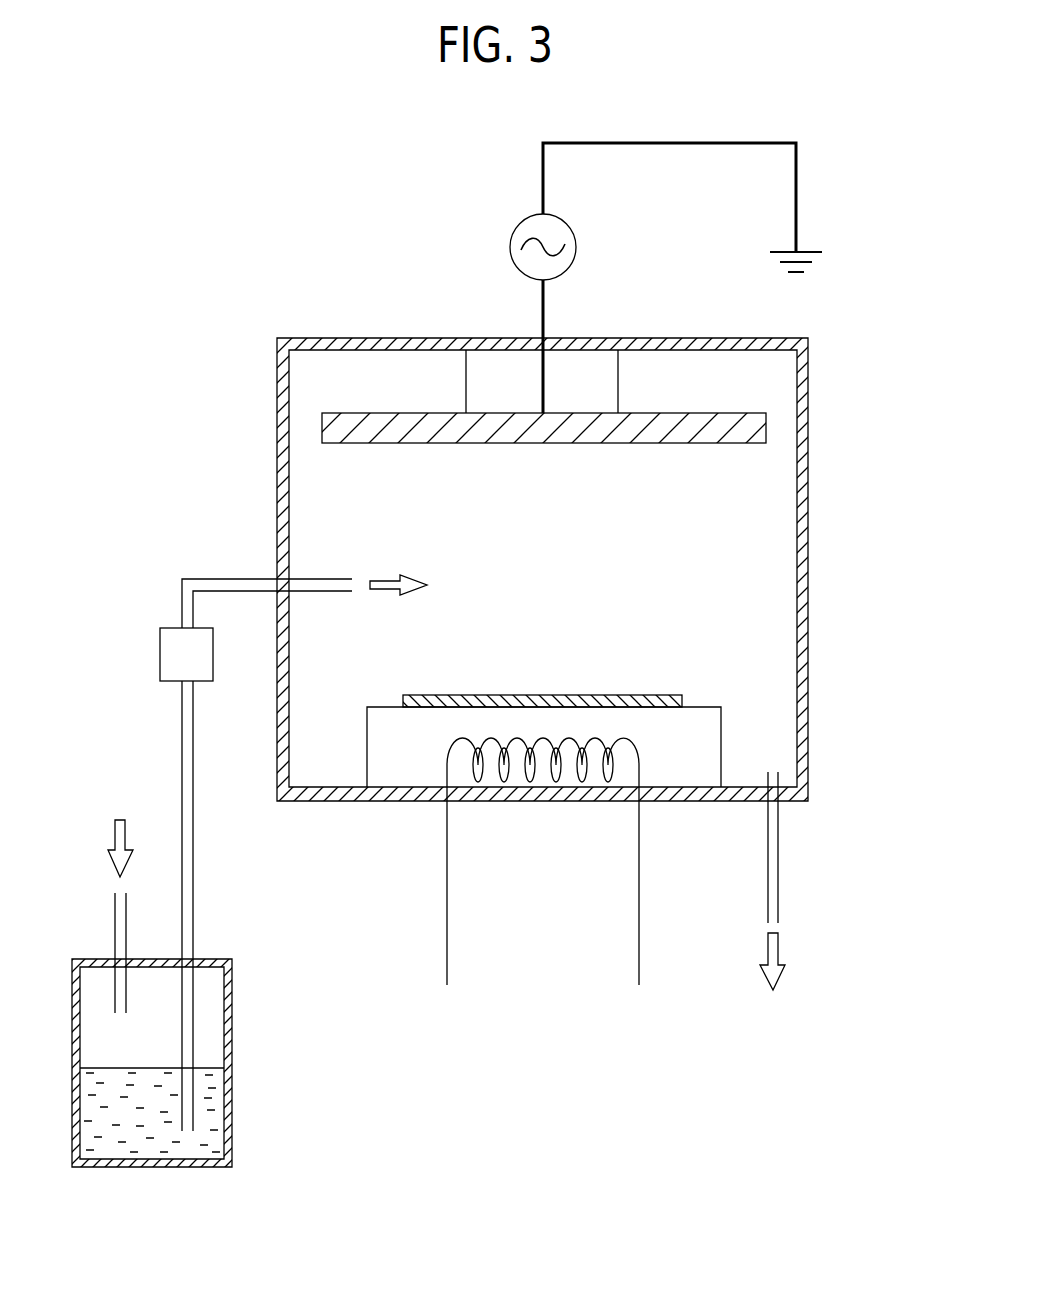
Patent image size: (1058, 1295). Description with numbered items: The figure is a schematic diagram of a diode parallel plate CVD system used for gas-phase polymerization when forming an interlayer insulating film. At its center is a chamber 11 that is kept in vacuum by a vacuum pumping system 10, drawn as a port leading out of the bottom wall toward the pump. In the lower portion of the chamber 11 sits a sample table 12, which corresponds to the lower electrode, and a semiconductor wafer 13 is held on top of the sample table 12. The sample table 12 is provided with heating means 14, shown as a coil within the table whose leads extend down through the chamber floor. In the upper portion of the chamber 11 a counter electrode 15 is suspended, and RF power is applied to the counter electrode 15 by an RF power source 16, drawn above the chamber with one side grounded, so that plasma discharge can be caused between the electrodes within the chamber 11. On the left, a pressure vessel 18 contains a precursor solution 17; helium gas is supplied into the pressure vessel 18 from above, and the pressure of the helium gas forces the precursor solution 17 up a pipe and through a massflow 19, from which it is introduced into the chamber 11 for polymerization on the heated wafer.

The vacuum pumping system 10 is at (778, 870).
The chamber 11 is at (808, 505).
The sample table 12 is at (721, 737).
The semiconductor wafer 13 is at (685, 697).
The heating means 14 is at (447, 880).
The counter electrode 15 is at (766, 428).
The RF power source 16 is at (577, 248).
The precursor solution 17 is at (210, 1105).
The pressure vessel 18 is at (232, 1015).
The massflow 19 is at (160, 650).